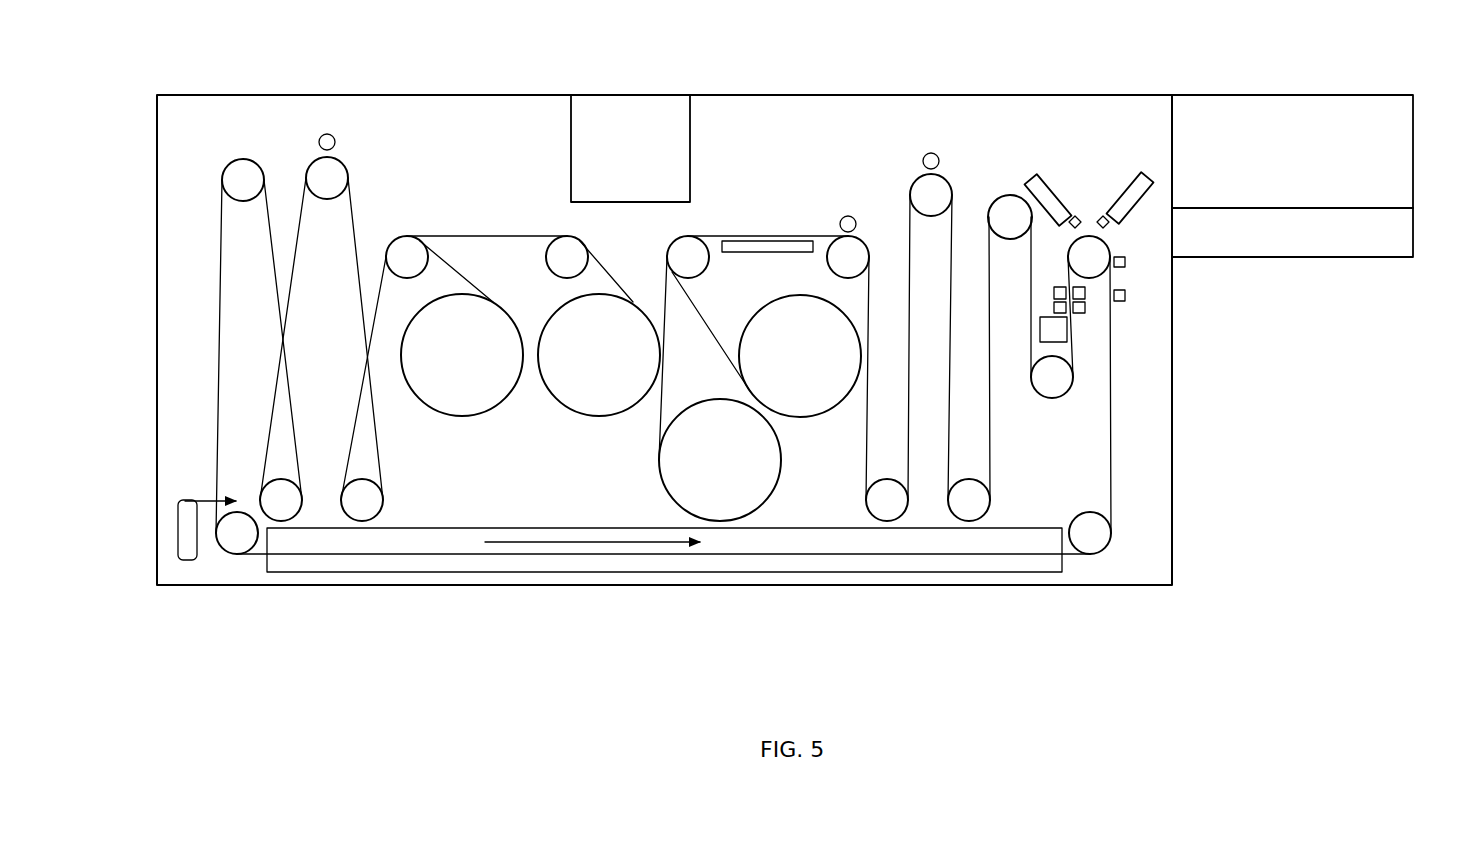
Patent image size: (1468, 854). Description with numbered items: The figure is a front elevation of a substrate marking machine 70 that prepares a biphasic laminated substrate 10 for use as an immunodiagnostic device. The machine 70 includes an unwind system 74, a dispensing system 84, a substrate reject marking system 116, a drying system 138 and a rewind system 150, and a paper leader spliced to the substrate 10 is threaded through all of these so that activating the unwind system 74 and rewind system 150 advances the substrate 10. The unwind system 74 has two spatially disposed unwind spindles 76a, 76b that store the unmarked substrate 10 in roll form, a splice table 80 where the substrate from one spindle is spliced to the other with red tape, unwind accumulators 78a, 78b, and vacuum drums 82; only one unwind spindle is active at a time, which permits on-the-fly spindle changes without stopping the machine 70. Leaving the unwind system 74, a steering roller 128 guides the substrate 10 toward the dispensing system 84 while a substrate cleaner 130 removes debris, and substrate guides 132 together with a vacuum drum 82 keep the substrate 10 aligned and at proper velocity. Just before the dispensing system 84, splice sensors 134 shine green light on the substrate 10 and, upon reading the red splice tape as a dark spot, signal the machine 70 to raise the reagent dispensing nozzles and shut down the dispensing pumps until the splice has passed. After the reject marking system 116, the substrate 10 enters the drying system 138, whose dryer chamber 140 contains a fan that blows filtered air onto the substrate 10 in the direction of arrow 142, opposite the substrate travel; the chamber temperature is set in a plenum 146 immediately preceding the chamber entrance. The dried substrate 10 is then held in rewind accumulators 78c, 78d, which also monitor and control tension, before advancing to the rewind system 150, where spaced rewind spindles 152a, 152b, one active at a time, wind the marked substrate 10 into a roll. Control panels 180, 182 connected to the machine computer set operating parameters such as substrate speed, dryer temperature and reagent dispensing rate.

The substrate marking machine 70 is at (722, 65).
The biphasic laminated substrate 10 is at (662, 404).
The unwind system 74 is at (766, 218).
The unwind spindle 76a is at (803, 416).
The unwind spindle 76b is at (765, 497).
The unwind accumulator 78a is at (968, 479).
The unwind accumulator 78b is at (886, 479).
The rewind accumulator 78c is at (362, 479).
The rewind accumulator 78d is at (281, 479).
The splice table 80 is at (790, 240).
The vacuum drum 82 is at (345, 165).
The dispensing system 84 is at (1074, 152).
The substrate reject marking system 116 is at (1125, 296).
The steering roller 128 is at (1052, 398).
The substrate cleaner 130 is at (1040, 325).
The substrate guides 132 is at (1082, 313).
The splice sensors 134 is at (1085, 296).
The drying system 138 is at (934, 610).
The dryer chamber 140 is at (1048, 567).
The arrow 142 is at (607, 528).
The plenum 146 is at (1085, 567).
The rewind system 150 is at (485, 218).
The rewind spindle 152a is at (594, 417).
The rewind spindle 152b is at (456, 417).
The control panel 180 is at (593, 95).
The control panel 182 is at (1403, 143).